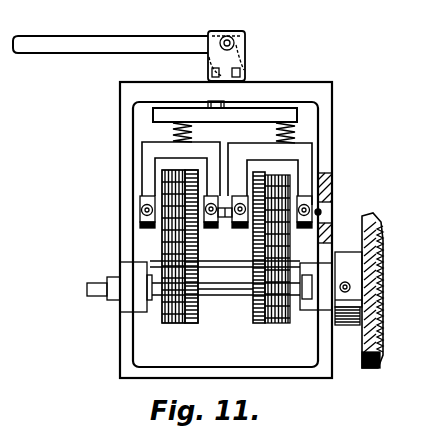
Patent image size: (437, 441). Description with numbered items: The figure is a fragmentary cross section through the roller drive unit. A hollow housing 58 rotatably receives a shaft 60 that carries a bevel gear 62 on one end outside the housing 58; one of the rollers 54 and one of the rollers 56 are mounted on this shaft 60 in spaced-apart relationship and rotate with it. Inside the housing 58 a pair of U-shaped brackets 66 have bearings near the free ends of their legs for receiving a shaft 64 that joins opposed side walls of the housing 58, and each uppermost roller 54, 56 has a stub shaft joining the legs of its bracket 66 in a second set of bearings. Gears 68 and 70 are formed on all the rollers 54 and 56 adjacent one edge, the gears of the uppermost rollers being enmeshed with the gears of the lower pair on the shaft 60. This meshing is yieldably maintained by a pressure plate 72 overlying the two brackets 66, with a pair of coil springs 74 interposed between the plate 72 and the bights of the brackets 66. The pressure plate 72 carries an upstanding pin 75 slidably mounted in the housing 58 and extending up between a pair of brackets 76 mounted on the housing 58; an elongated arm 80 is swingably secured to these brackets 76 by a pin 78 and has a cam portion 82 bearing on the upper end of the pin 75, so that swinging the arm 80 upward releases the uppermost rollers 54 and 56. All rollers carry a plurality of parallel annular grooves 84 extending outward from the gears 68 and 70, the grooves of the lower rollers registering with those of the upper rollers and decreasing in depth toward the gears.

The elongated arm 80 is at (137, 43).
The pin 78 is at (228, 36).
The brackets 76 is at (249, 40).
The cam portion 82 is at (248, 55).
The upstanding pin 75 is at (212, 103).
The pressure plate 72 is at (258, 112).
The coil springs 74 is at (175, 130).
The gears 68 is at (192, 170).
The U-shaped brackets 66 is at (145, 157).
The gears 70 is at (258, 173).
The annular grooves 84 is at (165, 182).
The rollers 54 is at (162, 237).
The shaft 64 is at (225, 218).
The rollers 56 is at (290, 262).
The shaft 60 is at (223, 288).
The bevel gear 62 is at (385, 283).
The housing 58 is at (322, 375).